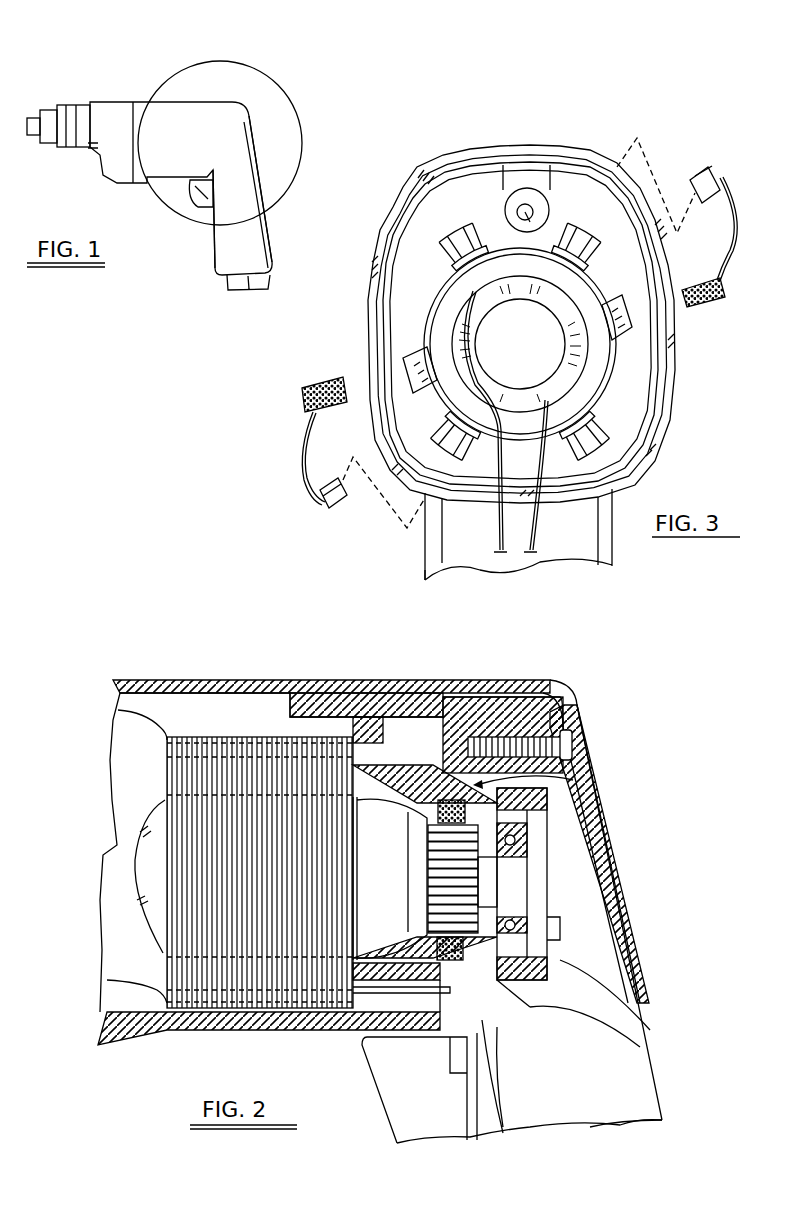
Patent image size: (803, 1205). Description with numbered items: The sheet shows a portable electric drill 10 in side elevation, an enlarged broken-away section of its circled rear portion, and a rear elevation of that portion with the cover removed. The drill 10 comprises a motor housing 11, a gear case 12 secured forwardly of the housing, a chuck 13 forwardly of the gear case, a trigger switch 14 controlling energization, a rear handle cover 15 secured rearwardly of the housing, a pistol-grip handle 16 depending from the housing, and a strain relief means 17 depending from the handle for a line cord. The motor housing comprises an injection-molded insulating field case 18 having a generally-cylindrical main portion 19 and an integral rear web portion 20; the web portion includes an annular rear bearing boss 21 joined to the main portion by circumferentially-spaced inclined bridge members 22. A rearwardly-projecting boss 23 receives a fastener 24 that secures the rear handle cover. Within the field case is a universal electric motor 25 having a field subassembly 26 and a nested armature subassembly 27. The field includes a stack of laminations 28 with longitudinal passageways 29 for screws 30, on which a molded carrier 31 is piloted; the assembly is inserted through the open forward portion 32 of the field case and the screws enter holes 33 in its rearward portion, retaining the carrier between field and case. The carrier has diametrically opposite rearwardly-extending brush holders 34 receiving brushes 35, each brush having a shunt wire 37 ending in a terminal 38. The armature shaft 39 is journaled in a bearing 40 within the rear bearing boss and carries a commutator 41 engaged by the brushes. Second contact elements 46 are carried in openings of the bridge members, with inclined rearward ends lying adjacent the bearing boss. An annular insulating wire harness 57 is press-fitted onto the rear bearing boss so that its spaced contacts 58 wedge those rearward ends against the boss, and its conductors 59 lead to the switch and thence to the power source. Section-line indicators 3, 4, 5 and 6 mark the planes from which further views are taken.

In FIG. 1, the portable electric drill 10 is at (98, 86).
In FIG. 1, the motor housing 11 is at (140, 88).
In FIG. 2, the motor housing 11 is at (122, 657).
In FIG. 1, the gear case 12 is at (117, 140).
In FIG. 1, the chuck 13 is at (58, 140).
In FIG. 1, the trigger switch 14 is at (193, 187).
In FIG. 2, the trigger switch 14 is at (427, 1100).
In FIG. 1, the rear handle cover 15 is at (263, 250).
In FIG. 2, the rear handle cover 15 is at (623, 897).
In FIG. 1, the pistol-grip handle 16 is at (227, 250).
In FIG. 3, the pistol-grip handle 16 is at (427, 562).
In FIG. 2, the pistol-grip handle 16 is at (570, 1110).
In FIG. 1, the strain relief means 17 is at (250, 287).
In FIG. 3, the field case 18 is at (444, 146).
In FIG. 2, the field case 18 is at (188, 668).
In FIG. 3, the main portion 19 is at (520, 151).
In FIG. 2, the main portion 19 is at (245, 677).
In FIG. 3, the rear web portion 20 is at (428, 298).
In FIG. 2, the rear web portion 20 is at (563, 790).
In FIG. 3, the rear bearing boss 21 is at (455, 337).
In FIG. 2, the rear bearing boss 21 is at (543, 823).
In FIG. 3, the inclined bridge members 22 is at (437, 257).
In FIG. 2, the inclined bridge members 22 is at (468, 957).
In FIG. 3, the rearwardly-projecting boss 23 is at (530, 198).
In FIG. 2, the rearwardly-projecting boss 23 is at (560, 720).
In FIG. 2, the fastener 24 is at (580, 737).
In FIG. 2, the electric motor 25 is at (120, 817).
In FIG. 2, the field subassembly 26 is at (150, 764).
In FIG. 2, the armature subassembly 27 is at (135, 863).
In FIG. 2, the stack of laminations 28 is at (190, 777).
In FIG. 2, the longitudinal passageways 29 is at (230, 745).
In FIG. 2, the screws 30 is at (117, 713).
In FIG. 2, the molded carrier 31 is at (363, 717).
In FIG. 2, the open forward portion 32 is at (107, 1002).
In FIG. 2, the holes 33 is at (393, 1037).
In FIG. 3, the brush holders 34 is at (427, 350).
In FIG. 3, the brushes 35 is at (318, 385).
In FIG. 2, the brushes 35 is at (438, 805).
In FIG. 3, the shunt wire 37 is at (300, 460).
In FIG. 3, the terminal 38 is at (340, 510).
In FIG. 2, the armature shaft 39 is at (460, 912).
In FIG. 2, the bearing 40 is at (517, 843).
In FIG. 2, the commutator 41 is at (530, 923).
In FIG. 2, the second contact elements 46 is at (477, 1140).
In FIG. 2, the wire harness 57 is at (545, 985).
In FIG. 2, the spaced contacts 58 is at (547, 968).
In FIG. 3, the conductors 59 is at (527, 532).
In FIG. 2, the conductors 59 is at (503, 1133).
In FIG. 2, the section line 3- 3 is at (685, 642).
In FIG. 3, the section line 4- 4 is at (358, 385).
In FIG. 3, the section line 5- 5 is at (443, 210).
In FIG. 3, the section line 6- 6 is at (607, 190).